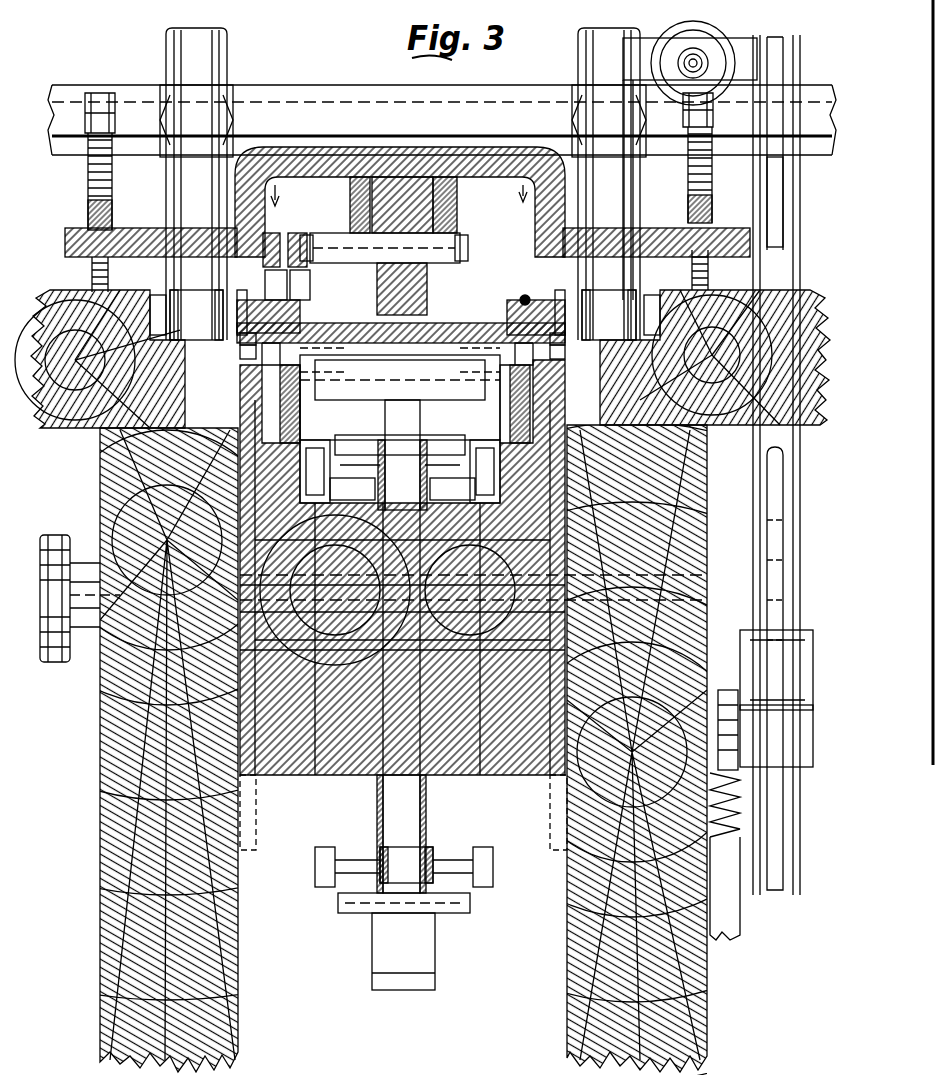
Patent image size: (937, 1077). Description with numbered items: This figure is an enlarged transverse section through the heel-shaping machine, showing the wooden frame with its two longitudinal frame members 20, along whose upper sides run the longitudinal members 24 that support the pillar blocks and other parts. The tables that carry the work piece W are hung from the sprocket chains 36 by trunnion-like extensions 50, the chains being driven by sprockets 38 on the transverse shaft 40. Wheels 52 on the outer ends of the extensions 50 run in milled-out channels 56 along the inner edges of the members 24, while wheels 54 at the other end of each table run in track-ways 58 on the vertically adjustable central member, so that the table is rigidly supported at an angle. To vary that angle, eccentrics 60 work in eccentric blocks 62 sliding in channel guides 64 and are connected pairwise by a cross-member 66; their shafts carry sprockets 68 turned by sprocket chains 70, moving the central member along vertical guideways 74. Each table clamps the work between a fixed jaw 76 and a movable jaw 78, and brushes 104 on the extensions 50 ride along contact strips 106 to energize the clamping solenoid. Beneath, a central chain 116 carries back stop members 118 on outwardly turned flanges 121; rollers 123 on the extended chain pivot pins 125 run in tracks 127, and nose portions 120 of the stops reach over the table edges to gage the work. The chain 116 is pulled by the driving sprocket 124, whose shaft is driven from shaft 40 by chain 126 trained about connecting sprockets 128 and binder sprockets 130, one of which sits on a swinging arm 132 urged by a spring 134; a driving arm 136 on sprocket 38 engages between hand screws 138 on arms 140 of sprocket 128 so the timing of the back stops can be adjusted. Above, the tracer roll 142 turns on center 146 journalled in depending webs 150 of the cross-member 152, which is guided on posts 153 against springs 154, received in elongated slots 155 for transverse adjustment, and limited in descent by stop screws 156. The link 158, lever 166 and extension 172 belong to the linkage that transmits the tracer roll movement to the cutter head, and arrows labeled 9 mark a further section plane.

The section line 9 is at (398, 206).
The longitudinal frame members 20 is at (240, 958).
The longitudinal members 24 is at (75, 430).
The sprocket chains 36 is at (250, 300).
The sprockets 38 is at (208, 48).
The transverse shaft 40 is at (317, 108).
The trunnion-like extensions 50 is at (525, 295).
The rolls or wheels 52 is at (158, 295).
The wheels 54 is at (322, 395).
The milled-out channels 56 is at (186, 290).
The track-ways 58 is at (300, 400).
The eccentrics 60 is at (335, 778).
The eccentric blocks 62 is at (290, 780).
The channel guides 64 is at (315, 790).
The cross-member 66 is at (430, 778).
The sprockets 68 is at (72, 655).
The sprocket chains 70 is at (62, 530).
The vertical guideways 74 is at (256, 808).
The fixed jaw 76 is at (470, 357).
The opposed jaw 78 is at (330, 357).
The work pieces or blanks W is at (480, 325).
The brushes 104 is at (256, 340).
The contact strips 106 is at (260, 353).
The chain 116 is at (425, 855).
The back stop members 118 is at (383, 935).
The nose portions 120 is at (395, 990).
The outwardly turned flanges 121 is at (350, 450).
The rollers 123 is at (292, 882).
The driving sprocket 124 is at (410, 818).
The chain pivot pins 125 is at (400, 440).
The chain 126 is at (755, 510).
The tracks 127 is at (318, 440).
The connecting sprockets 128 is at (778, 45).
The binder sprockets 130 is at (785, 790).
The swinging arm 132 is at (735, 690).
The spring 134 is at (740, 905).
The driving arm 136 is at (645, 40).
The hand screws 138 is at (720, 22).
The arms 140 is at (725, 50).
The tracer roll 142 is at (445, 282).
The shaft or center 146 is at (440, 240).
The depending webs 150 is at (345, 195).
The cross-member 152 is at (330, 158).
The posts 153 is at (100, 93).
The springs 154 is at (112, 165).
The transversely elongated slots 155 is at (112, 210).
The stop screws 156 is at (90, 270).
The link 158 is at (288, 236).
The lever 166 is at (312, 278).
The extension 172 is at (287, 283).